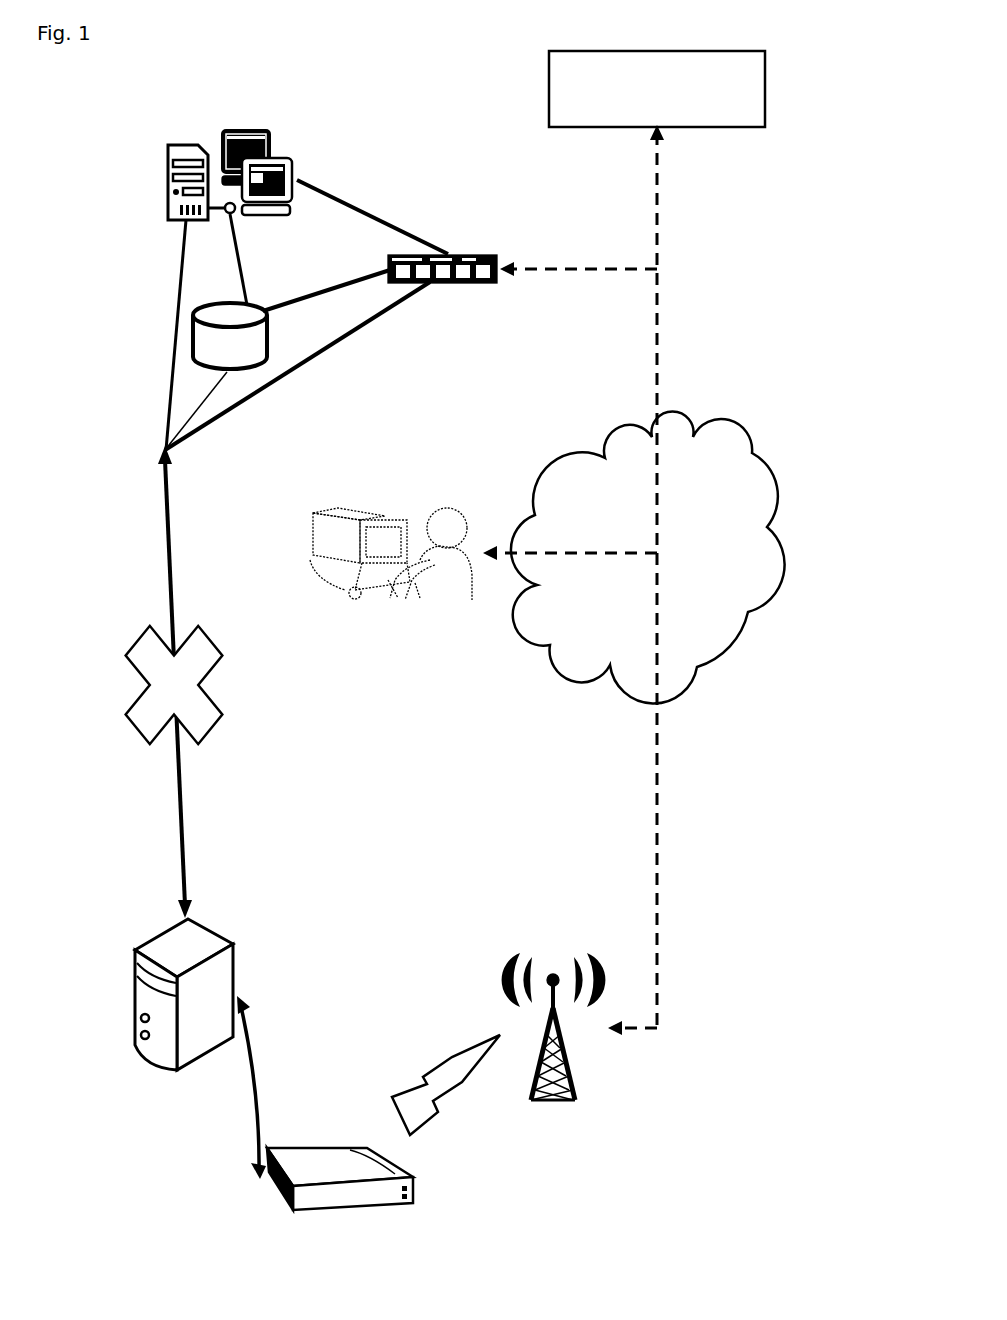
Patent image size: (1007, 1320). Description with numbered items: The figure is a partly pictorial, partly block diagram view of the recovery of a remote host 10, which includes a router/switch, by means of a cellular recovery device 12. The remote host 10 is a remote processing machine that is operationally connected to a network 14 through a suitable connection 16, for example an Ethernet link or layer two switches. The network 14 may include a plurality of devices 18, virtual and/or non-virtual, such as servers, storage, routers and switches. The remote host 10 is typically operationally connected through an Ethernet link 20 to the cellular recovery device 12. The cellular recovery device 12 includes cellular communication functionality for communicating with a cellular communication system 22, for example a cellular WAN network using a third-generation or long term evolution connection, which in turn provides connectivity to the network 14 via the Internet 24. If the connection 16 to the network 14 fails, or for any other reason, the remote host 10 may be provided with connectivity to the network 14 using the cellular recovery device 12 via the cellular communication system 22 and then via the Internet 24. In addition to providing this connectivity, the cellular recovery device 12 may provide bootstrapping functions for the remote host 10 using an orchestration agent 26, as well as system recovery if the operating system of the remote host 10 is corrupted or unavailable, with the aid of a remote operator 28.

The remote host 10 is at (135, 995).
The cellular recovery device 12 is at (340, 1142).
The network 14 is at (375, 217).
The connection 16 is at (178, 837).
The devices 18 is at (268, 139).
The Ethernet link 20 is at (246, 1105).
The cellular communication system 22 is at (553, 953).
The Internet 24 is at (728, 663).
The orchestration agent 26 is at (549, 90).
The remote operator 28 is at (453, 508).